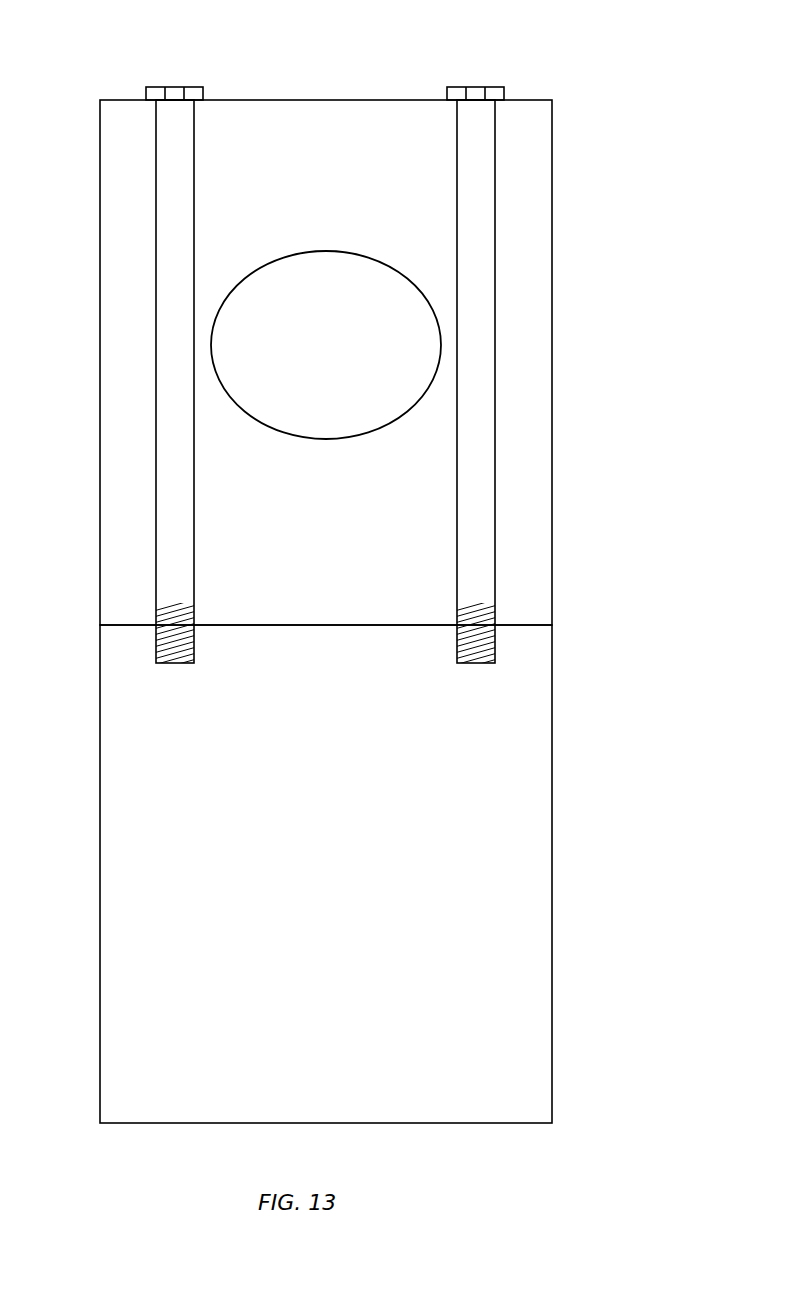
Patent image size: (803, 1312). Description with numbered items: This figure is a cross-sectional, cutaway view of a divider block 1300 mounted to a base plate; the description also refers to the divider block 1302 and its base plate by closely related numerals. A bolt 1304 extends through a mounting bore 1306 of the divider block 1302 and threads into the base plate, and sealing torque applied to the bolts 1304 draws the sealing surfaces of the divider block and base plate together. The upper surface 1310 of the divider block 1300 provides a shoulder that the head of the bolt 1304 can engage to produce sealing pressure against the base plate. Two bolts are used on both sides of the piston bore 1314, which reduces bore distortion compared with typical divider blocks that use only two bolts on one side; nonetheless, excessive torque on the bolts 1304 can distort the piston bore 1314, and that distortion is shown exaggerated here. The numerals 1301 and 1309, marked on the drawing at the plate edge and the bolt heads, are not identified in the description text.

The divider block 1300 is at (607, 326).
The upper plate 1301 is at (552, 170).
The divider block 1302 is at (552, 792).
The bolt 1304 is at (176, 514).
The mounting bore 1306 is at (156, 222).
The nut 1309 is at (175, 86).
The upper surface 1310 is at (197, 101).
The piston bore 1314 is at (302, 251).